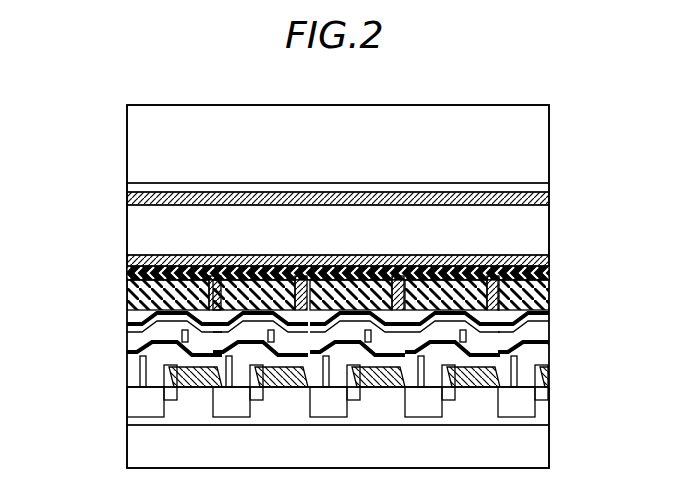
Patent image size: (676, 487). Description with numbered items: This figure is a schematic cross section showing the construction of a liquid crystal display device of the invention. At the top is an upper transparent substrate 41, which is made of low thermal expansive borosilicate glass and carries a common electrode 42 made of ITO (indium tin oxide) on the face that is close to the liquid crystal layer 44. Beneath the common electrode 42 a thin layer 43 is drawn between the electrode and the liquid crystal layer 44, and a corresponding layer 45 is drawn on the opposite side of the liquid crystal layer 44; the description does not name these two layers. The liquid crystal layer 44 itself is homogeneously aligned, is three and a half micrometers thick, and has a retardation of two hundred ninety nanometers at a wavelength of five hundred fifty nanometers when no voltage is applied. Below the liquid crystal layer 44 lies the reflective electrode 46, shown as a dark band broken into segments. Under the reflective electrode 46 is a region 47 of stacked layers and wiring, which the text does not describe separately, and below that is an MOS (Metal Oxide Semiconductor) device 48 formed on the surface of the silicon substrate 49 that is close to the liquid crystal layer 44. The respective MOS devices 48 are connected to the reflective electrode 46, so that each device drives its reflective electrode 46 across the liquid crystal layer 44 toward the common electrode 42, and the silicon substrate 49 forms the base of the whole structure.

The upper transparent substrate 41 is at (338, 144).
The common electrode 42 is at (551, 185).
The alignment film 43 is at (127, 200).
The liquid crystal layer 44 is at (338, 230).
The alignment film 45 is at (127, 258).
The reflective electrode 46 is at (551, 270).
The wiring layers 47 is at (562, 300).
The MOS device 48 is at (562, 364).
The silicon substrate 49 is at (338, 446).